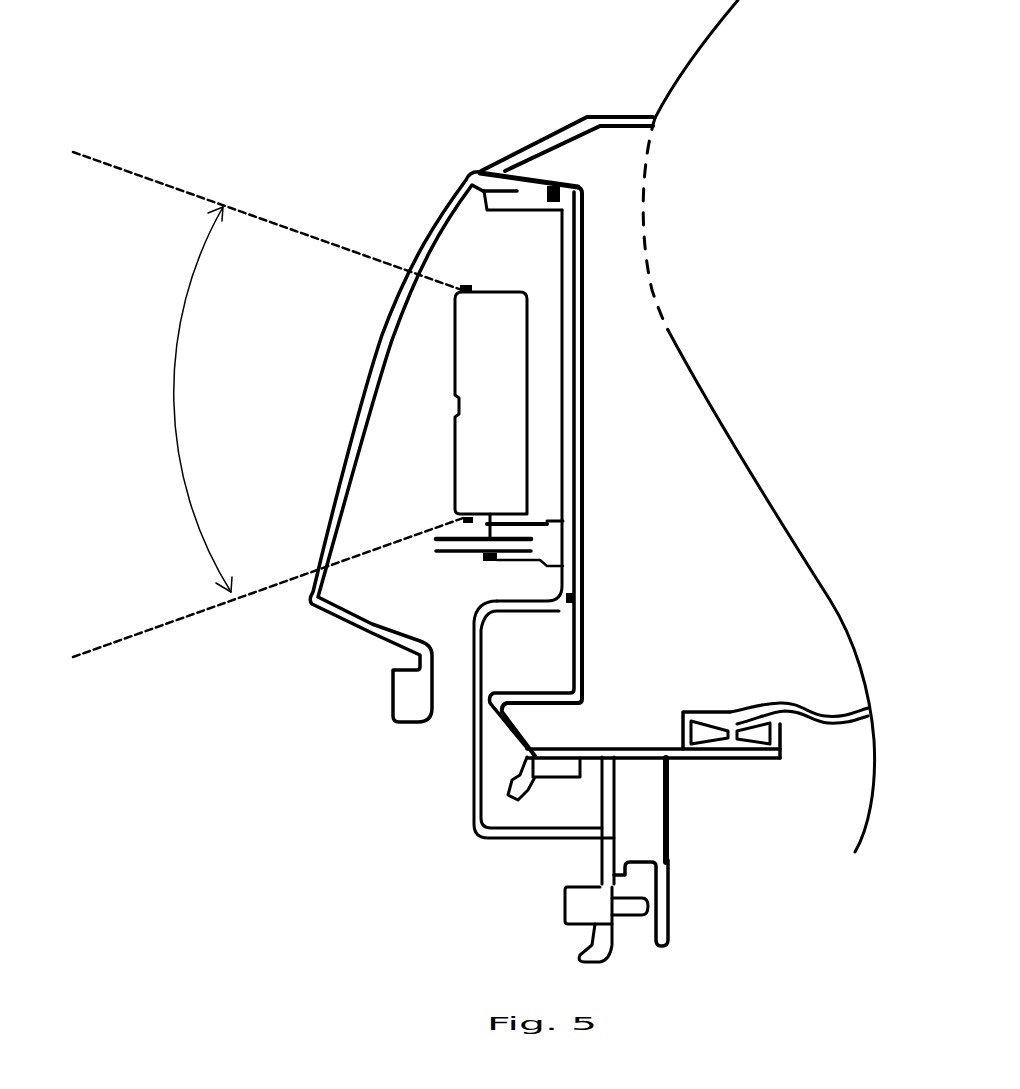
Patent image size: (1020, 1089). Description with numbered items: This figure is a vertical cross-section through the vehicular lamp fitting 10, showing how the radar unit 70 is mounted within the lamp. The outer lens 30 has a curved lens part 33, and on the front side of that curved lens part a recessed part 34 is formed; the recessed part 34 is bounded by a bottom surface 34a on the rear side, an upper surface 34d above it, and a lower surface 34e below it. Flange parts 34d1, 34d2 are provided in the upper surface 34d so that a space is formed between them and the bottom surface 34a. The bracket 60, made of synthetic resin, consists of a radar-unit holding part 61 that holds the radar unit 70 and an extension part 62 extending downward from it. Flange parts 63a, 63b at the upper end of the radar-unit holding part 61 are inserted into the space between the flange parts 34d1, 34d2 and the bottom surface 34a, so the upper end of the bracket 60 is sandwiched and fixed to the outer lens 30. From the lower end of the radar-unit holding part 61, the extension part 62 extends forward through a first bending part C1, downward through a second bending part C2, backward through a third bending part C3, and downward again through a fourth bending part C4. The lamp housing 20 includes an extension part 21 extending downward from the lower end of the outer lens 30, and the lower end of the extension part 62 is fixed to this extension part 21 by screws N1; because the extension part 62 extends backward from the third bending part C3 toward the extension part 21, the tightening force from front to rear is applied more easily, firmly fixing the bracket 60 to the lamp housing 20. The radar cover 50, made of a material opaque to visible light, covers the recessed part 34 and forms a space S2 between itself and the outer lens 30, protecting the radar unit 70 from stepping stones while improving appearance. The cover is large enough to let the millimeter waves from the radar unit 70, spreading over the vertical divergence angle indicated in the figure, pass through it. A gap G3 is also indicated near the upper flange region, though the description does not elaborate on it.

The vehicular lamp fitting 10 is at (557, 80).
The lamp housing 20 is at (567, 133).
The extension part 21 is at (668, 895).
The outer lens 30 is at (590, 493).
The curved lens part 33 is at (590, 493).
The recessed part 34 is at (594, 493).
The bottom surface 34a is at (536, 493).
The upper surface 34d is at (567, 156).
The flange part 34d1 is at (567, 175).
The flange part 34d2 is at (537, 175).
The lower surface 34e is at (538, 690).
The radar cover 50 is at (353, 413).
The bracket 60 is at (561, 405).
The radar-unit holding part 61 is at (576, 413).
The extension part 62 is at (473, 765).
The flange part 63a is at (582, 198).
The flange part 63b is at (573, 197).
The radar unit 70 is at (481, 289).
The gap G3 is at (478, 170).
The space S2 is at (413, 458).
The first bending part C1 is at (563, 598).
The second bending part C2 is at (482, 603).
The third bending part C3 is at (477, 823).
The fourth bending part C4 is at (612, 837).
The screws N1 is at (567, 898).